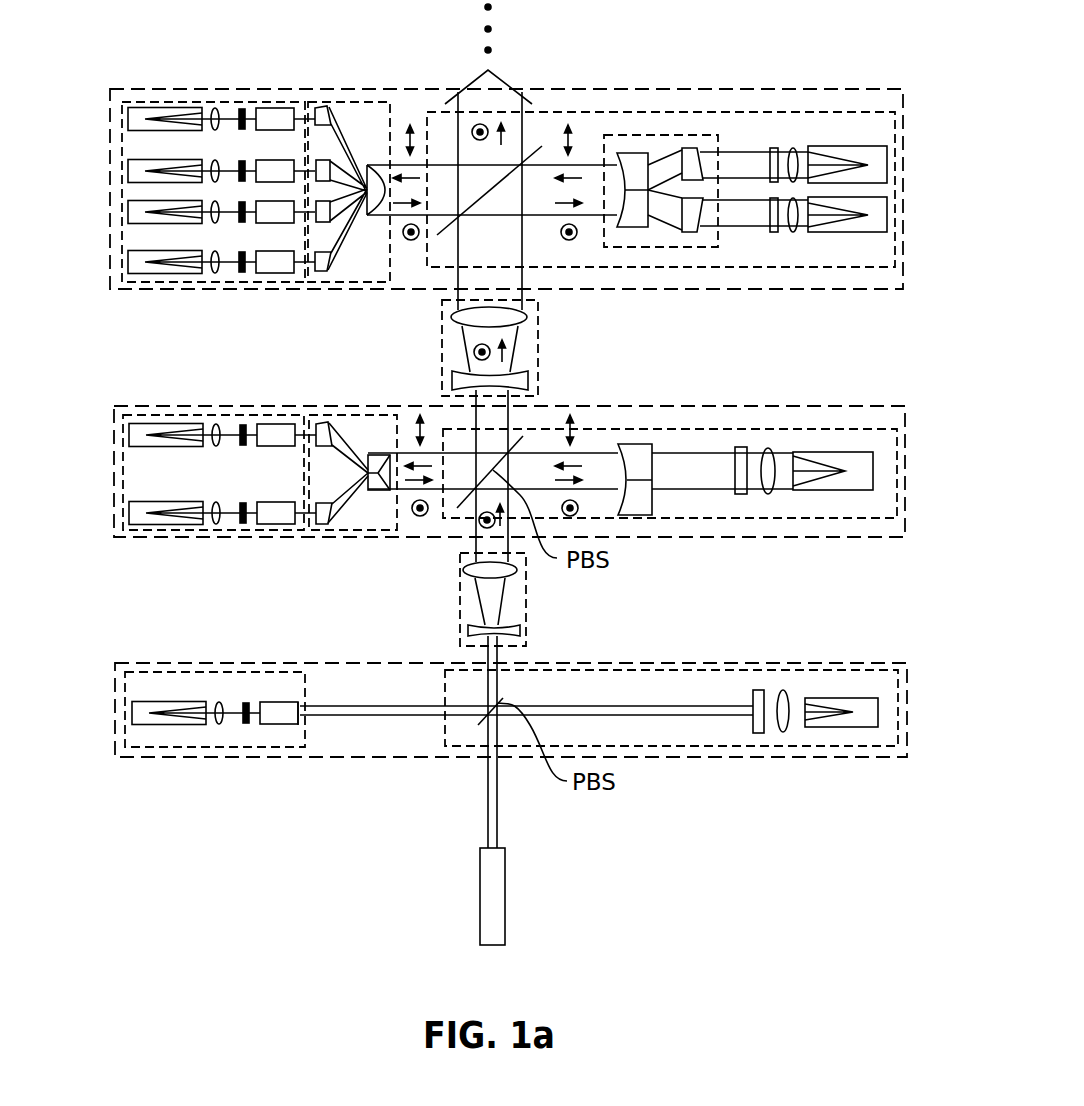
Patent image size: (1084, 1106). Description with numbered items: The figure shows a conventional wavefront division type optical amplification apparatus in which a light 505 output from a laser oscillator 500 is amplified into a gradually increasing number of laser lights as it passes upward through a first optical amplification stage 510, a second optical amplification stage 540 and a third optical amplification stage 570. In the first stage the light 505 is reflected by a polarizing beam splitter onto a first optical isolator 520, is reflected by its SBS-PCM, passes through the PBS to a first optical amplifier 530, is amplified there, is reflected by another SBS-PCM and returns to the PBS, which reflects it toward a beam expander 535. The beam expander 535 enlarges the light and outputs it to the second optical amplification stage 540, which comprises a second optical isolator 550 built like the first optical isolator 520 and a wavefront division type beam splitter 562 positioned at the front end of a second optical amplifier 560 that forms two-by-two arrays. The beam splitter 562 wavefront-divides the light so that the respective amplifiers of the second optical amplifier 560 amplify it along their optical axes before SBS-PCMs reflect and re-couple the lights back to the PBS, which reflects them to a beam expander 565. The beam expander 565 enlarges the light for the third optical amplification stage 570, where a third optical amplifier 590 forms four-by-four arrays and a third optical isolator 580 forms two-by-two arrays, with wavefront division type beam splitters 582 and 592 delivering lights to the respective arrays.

The laser oscillator 500 is at (480, 895).
The light 505 is at (487, 780).
The first optical amplification stage 510 is at (633, 664).
The first optical isolator 520 is at (770, 670).
The first optical amplifier 530 is at (230, 672).
The beam expander 535 is at (460, 585).
The second optical amplification stage 540 is at (633, 405).
The second optical isolator 550 is at (765, 429).
The second optical amplifier 560 is at (228, 415).
The wavefront division type beam splitter 562 is at (336, 415).
The beam expander 565 is at (442, 340).
The third optical amplification stage 570 is at (598, 89).
The third optical isolator 580 is at (661, 154).
The wavefront division type beam splitter 582 is at (720, 143).
The third optical amplifier 590 is at (228, 98).
The wavefront division type beam splitter 592 is at (333, 98).